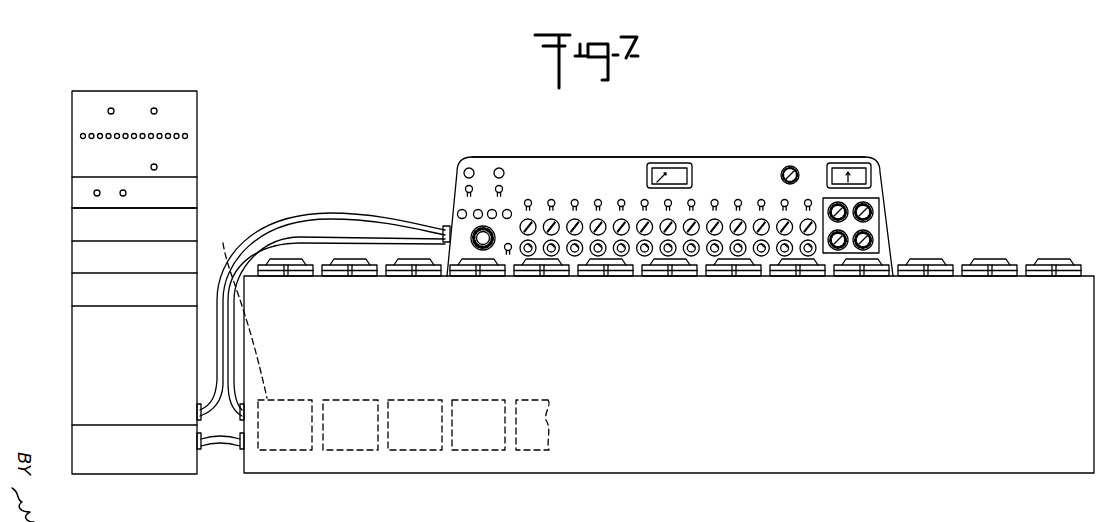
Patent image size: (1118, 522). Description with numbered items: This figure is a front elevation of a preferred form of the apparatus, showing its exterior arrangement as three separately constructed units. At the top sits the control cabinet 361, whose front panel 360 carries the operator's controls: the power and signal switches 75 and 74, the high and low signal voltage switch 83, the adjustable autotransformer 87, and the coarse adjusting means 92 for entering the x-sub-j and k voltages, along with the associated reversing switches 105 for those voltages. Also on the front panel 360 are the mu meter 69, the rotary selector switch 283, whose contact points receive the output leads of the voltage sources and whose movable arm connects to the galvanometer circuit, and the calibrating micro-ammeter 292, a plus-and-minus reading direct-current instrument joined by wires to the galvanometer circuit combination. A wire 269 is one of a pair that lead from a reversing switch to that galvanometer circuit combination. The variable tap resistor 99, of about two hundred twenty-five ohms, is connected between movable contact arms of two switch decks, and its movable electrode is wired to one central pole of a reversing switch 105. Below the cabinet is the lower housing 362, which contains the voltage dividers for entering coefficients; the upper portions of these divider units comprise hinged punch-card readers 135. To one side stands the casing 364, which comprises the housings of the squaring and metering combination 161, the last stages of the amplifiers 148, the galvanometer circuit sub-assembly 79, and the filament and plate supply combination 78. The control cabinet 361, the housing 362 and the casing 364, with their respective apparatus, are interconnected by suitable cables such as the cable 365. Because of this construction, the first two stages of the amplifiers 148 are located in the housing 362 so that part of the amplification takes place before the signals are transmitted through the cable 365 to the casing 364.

The casing 364 is at (198, 159).
The squaring and metering combination 161 is at (77, 185).
The galvanometer circuit sub-assembly 79 is at (72, 214).
The filament and plate supply combination 78 is at (75, 336).
The amplifiers 148 is at (191, 262).
The hinged punch-card readers 135 is at (272, 266).
The power switch 75 is at (466, 190).
The signal switch 74 is at (487, 193).
The reversing switch 105 is at (527, 200).
The coarse adjusting means 92 is at (535, 221).
The front panel 360 is at (605, 172).
The μ meter 69 is at (667, 170).
The control cabinet 361 is at (722, 157).
The rotary selector switch 283 is at (796, 167).
The calibrating micro-ammeter 292 is at (872, 176).
The wire 269 is at (882, 228).
The adjustable autotransformer 87 is at (490, 250).
The high and low signal voltage switch 83 is at (508, 256).
The variable tap resistor 99 is at (531, 256).
The cable 365 is at (237, 448).
The lower housing 362 is at (1022, 458).